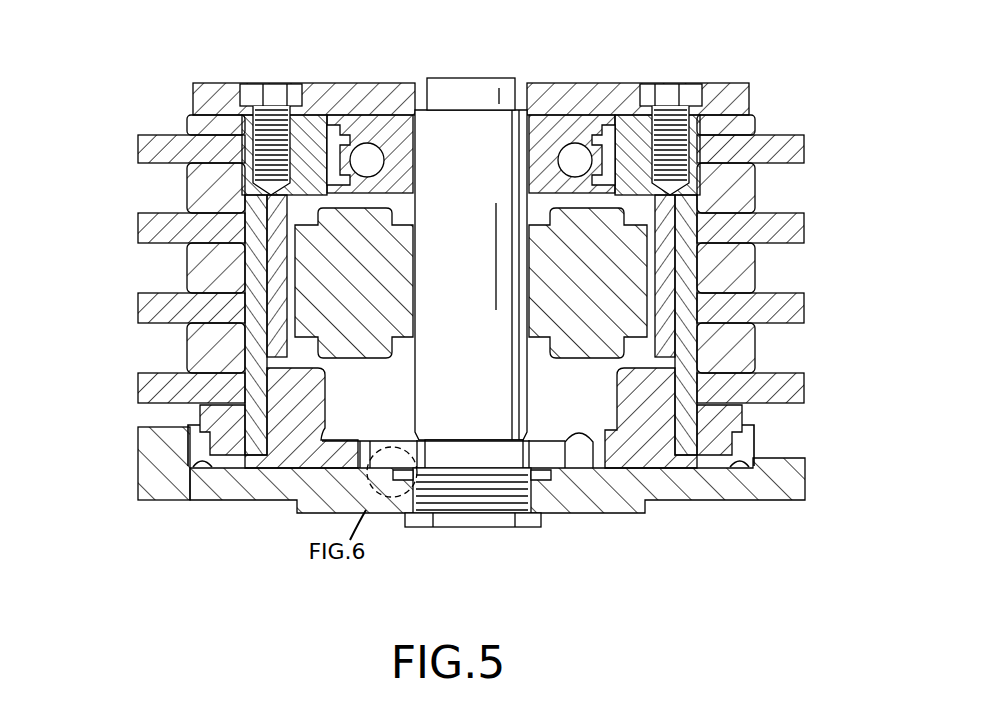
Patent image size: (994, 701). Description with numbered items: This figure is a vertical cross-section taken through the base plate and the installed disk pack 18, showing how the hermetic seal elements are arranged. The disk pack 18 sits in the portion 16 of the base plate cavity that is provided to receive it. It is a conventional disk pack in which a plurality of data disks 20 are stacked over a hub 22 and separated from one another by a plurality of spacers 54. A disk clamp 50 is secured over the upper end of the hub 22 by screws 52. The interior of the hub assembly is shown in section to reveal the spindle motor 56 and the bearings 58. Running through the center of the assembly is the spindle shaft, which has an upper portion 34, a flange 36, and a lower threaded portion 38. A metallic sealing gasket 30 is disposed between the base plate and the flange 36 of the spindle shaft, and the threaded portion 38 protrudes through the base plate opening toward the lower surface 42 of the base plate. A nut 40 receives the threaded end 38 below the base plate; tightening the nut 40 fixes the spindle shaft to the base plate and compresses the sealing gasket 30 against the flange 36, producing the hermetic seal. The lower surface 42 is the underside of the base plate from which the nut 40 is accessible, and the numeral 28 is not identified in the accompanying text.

The portion of the cavity 16 is at (195, 445).
The disk pack 18 is at (853, 170).
The data disks 20 is at (806, 212).
The hub 22 is at (312, 137).
The retaining clip 28 is at (192, 480).
The sealing gasket 30 is at (395, 487).
The upper portion 34 is at (436, 130).
The flange 36 is at (376, 441).
The lower threaded portion 38 is at (506, 512).
The nut 40 is at (410, 520).
The lower surface 42 is at (225, 505).
The disk clamp 50 is at (210, 88).
The screws 52 is at (270, 88).
The spacers 54 is at (187, 265).
The spindle motor 56 is at (547, 290).
The bearings 58 is at (357, 155).